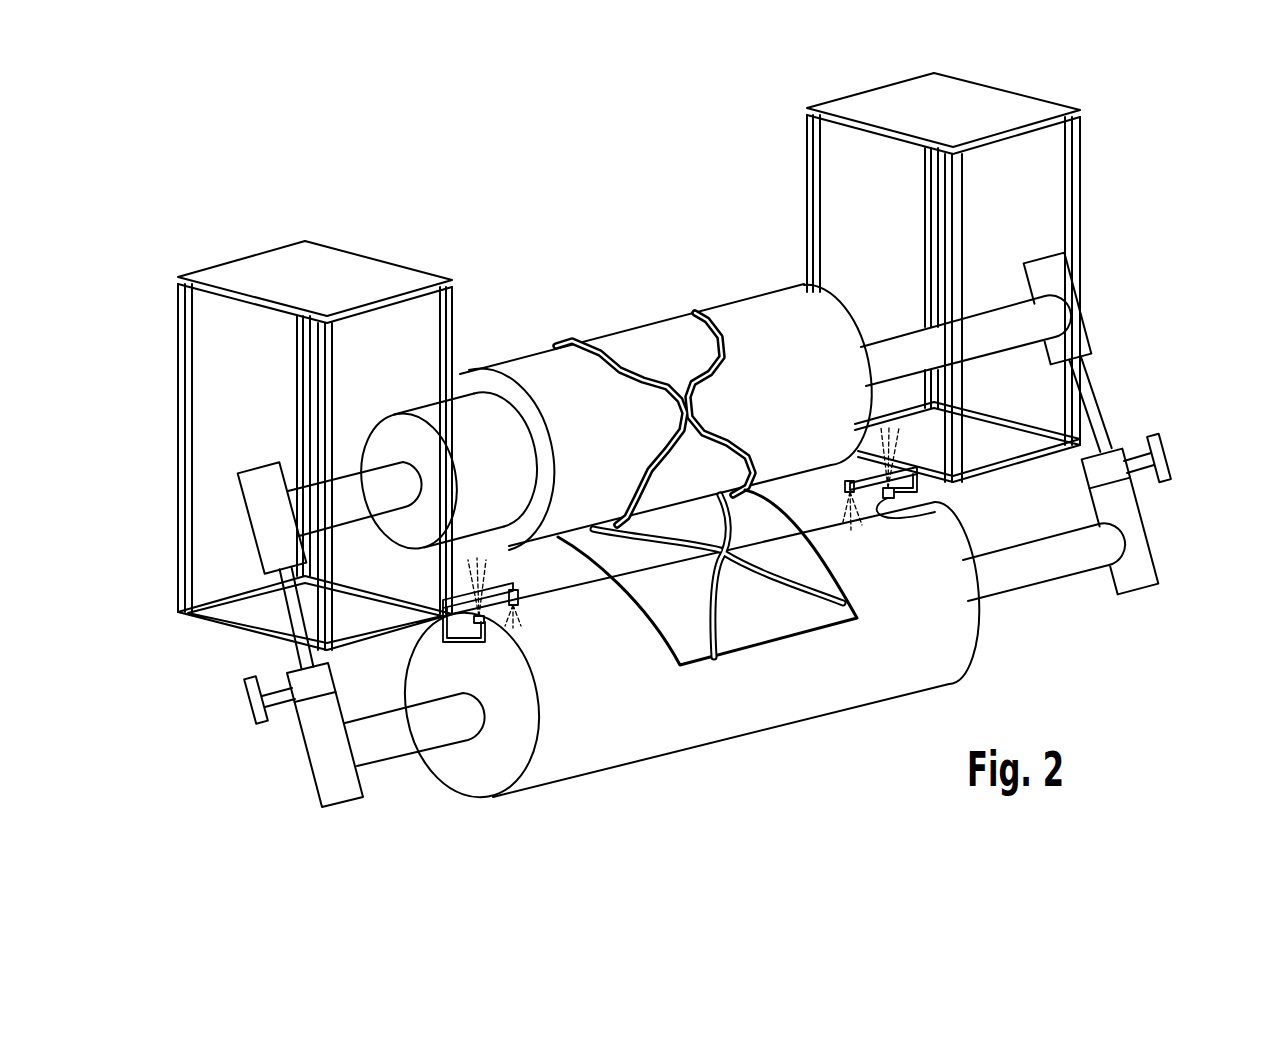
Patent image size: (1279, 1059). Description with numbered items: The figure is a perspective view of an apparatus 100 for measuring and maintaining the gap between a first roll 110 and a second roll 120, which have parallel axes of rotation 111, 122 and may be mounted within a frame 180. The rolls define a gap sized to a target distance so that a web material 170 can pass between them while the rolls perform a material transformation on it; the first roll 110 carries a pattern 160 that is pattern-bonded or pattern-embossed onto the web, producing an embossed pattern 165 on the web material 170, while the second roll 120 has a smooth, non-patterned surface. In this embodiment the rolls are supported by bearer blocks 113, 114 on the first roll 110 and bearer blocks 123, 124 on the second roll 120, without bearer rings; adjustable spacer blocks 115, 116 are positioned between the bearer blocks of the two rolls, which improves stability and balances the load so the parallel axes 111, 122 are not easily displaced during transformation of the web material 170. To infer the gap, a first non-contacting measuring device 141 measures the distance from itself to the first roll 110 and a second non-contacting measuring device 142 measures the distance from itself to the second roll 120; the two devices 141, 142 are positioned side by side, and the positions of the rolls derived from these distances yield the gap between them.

The apparatus 100 is at (557, 191).
The first roll 110 is at (506, 352).
The axis of rotation of the first roll 111 is at (1020, 312).
The bearer block 113 is at (262, 478).
The bearer block 114 is at (1050, 266).
The adjustable spacer block 115 is at (300, 700).
The adjustable spacer block 116 is at (1117, 447).
The second roll 120 is at (593, 780).
The axis of rotation of the second roll 122 is at (992, 580).
The bearer block 123 is at (337, 806).
The bearer block 124 is at (1140, 550).
The first non-contacting measuring device 141 is at (490, 623).
The second non-contacting measuring device 142 is at (525, 600).
The pattern 160 is at (716, 322).
The embossed pattern 165 is at (685, 668).
The web material 170 is at (818, 628).
The frame 180 is at (275, 262).